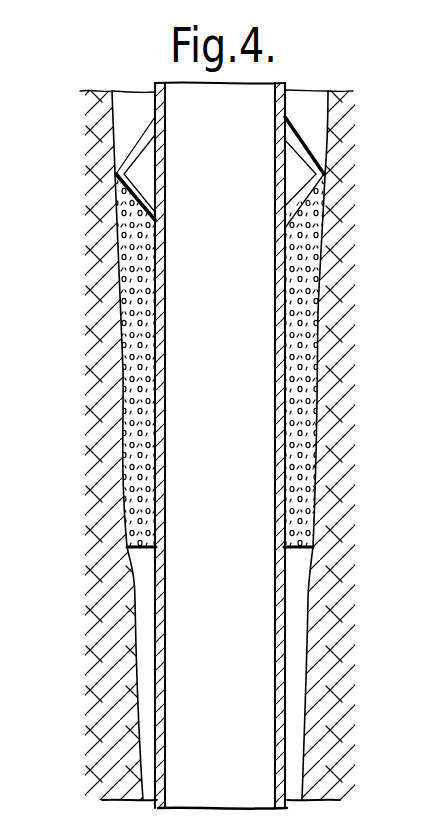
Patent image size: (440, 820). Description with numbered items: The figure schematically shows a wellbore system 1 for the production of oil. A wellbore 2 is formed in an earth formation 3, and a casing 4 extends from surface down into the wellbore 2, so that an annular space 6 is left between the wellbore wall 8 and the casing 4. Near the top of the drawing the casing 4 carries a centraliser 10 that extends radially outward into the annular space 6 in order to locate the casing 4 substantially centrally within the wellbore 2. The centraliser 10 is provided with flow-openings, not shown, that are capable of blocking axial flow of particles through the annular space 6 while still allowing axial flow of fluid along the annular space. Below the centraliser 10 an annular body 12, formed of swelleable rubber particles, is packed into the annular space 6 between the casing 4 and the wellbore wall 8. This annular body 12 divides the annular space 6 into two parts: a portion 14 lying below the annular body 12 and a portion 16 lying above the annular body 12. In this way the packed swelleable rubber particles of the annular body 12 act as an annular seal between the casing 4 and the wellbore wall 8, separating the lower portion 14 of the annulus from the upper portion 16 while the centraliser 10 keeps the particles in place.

The wellbore system 1 is at (320, 582).
The wellbore 2 is at (338, 237).
The earth formation 3 is at (357, 471).
The casing 4 is at (169, 333).
The annular space 6 is at (328, 378).
The wellbore wall 8 is at (133, 642).
The centraliser 10 is at (313, 147).
The annular body 12 is at (125, 372).
The portion below the annular body 14 is at (297, 640).
The portion above the annular body 16 is at (312, 112).